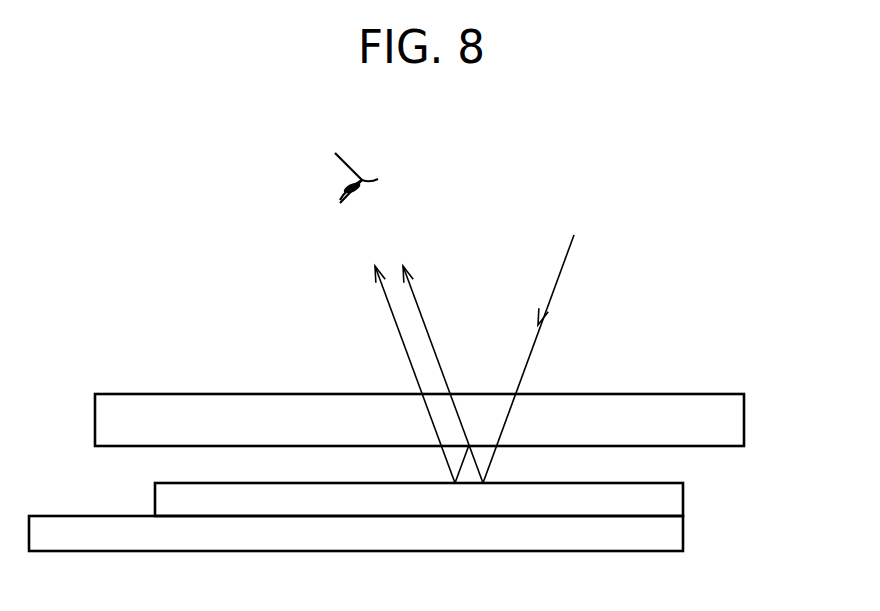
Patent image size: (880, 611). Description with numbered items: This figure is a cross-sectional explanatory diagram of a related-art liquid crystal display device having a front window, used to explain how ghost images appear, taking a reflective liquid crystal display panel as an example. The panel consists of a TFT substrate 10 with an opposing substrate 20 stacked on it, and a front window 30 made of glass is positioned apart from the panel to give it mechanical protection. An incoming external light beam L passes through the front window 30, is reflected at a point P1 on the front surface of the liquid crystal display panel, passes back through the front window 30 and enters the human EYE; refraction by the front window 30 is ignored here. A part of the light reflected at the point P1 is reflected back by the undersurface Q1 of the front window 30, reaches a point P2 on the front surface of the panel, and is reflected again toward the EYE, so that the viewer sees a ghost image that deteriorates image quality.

The TFT substrate 10 is at (683, 533).
The opposing substrate 20 is at (683, 498).
The front window 30 is at (744, 420).
The external light beam L is at (532, 348).
The point P1 on the front surface of the liquid crystal display panel P1 is at (453, 389).
The point P2 on the front surface of the liquid crystal display panel P2 is at (422, 389).
The undersurface of the front window Q1 is at (481, 423).
The human eye EYE is at (340, 179).